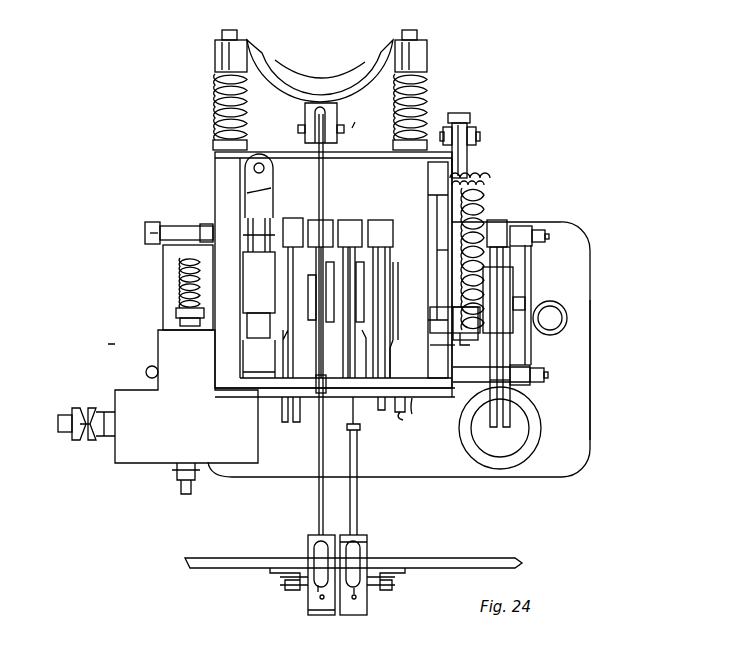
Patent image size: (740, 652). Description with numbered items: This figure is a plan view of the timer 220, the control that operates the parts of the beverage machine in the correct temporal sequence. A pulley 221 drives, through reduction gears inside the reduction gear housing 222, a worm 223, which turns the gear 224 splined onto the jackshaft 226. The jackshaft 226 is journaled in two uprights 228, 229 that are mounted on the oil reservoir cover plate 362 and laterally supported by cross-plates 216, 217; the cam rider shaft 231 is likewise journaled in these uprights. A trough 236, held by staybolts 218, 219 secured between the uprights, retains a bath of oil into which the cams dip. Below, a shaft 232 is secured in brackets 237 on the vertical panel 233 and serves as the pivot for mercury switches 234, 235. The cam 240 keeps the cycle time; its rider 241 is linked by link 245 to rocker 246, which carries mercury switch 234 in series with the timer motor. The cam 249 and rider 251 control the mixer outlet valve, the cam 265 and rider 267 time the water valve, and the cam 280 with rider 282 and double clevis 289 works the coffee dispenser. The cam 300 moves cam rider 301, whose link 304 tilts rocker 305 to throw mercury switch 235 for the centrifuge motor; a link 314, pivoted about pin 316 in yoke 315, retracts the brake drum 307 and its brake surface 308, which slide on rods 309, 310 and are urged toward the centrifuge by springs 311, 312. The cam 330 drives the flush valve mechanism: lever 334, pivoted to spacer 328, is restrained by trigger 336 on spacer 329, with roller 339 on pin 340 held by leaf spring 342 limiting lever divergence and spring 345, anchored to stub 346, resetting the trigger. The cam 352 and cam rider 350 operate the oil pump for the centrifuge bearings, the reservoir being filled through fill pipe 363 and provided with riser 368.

The cross-plate 216 is at (420, 402).
The cross-plate 217 is at (369, 131).
The staybolt 218 is at (548, 376).
The staybolt 219 is at (547, 235).
The timer 220 is at (537, 478).
The pulley 221 is at (76, 446).
The reduction gear housing 222 is at (150, 462).
The worm 223 is at (176, 313).
The gear 224 is at (180, 273).
The jackshaft 226 is at (525, 298).
The upright 228 is at (215, 172).
The upright 229 is at (406, 412).
The cam rider shaft 231 is at (204, 224).
The shaft 232 is at (404, 577).
The vertical panel 233 is at (500, 562).
The mercury switch 234 is at (356, 590).
The mercury switch 235 is at (316, 588).
The trough 236 is at (515, 356).
The bracket 237 is at (272, 572).
The cam 240 is at (361, 278).
The rider 241 is at (360, 220).
The link 245 is at (358, 506).
The rocker 246 is at (368, 546).
The cam 249 is at (259, 359).
The rider 251 is at (298, 220).
The cam 265 is at (394, 302).
The rider 267 is at (388, 220).
The cam 280 is at (270, 328).
The rider 282 is at (259, 265).
The double clevis 289 is at (270, 192).
The cam 300 is at (330, 280).
The cam rider 301 is at (326, 219).
The link 304 is at (318, 510).
The rocker 305 is at (308, 542).
The brake drum 307 is at (268, 58).
The brake surface 308 is at (298, 82).
The rod 309 is at (222, 37).
The rod 310 is at (418, 36).
The spring 311 is at (216, 85).
The spring 312 is at (428, 90).
The link 314 is at (323, 182).
The yoke 315 is at (338, 116).
The pin 316 is at (298, 130).
The spacer 328 is at (432, 195).
The spacer 329 is at (455, 338).
The cam 330 is at (445, 280).
The lever 334 is at (468, 165).
The trigger 336 is at (475, 341).
The roller 339 is at (477, 128).
The pin 340 is at (480, 138).
The leaf spring 342 is at (460, 114).
The spring 345 is at (486, 200).
The retainer 346 is at (488, 180).
The cam rider 350 is at (498, 220).
The cam 352 is at (514, 285).
The oil reservoir cover plate 362 is at (590, 437).
The fill pipe 363 is at (567, 316).
The riser 368 is at (541, 420).